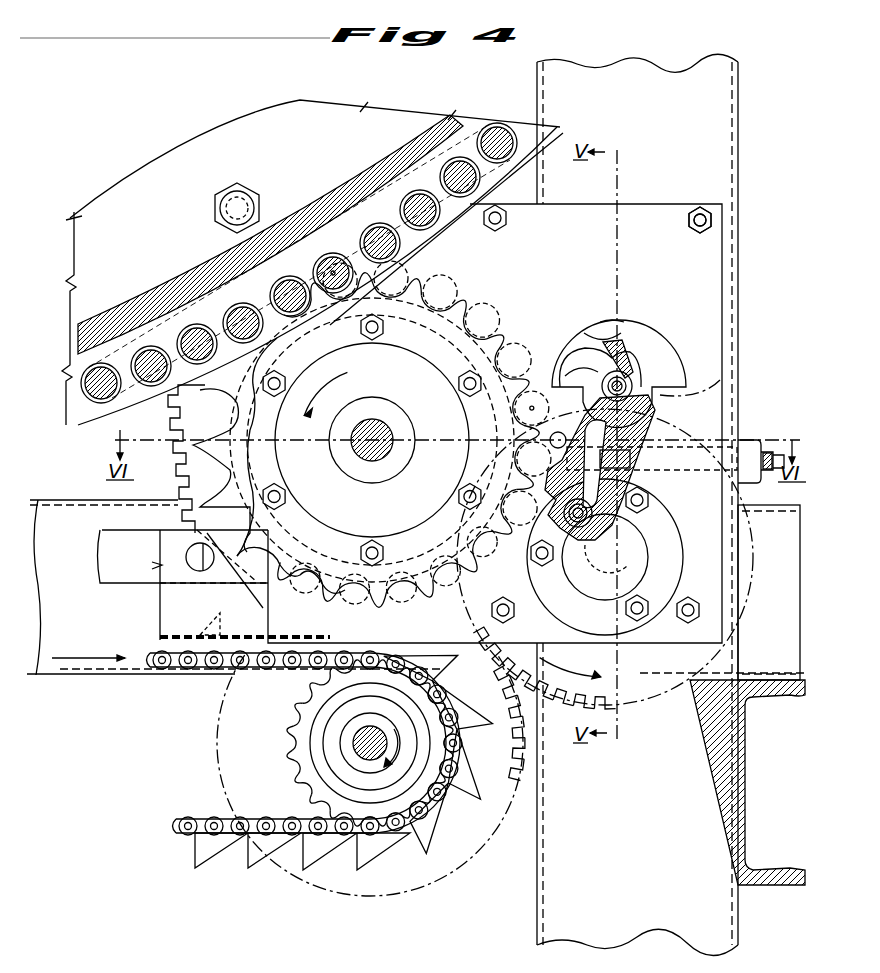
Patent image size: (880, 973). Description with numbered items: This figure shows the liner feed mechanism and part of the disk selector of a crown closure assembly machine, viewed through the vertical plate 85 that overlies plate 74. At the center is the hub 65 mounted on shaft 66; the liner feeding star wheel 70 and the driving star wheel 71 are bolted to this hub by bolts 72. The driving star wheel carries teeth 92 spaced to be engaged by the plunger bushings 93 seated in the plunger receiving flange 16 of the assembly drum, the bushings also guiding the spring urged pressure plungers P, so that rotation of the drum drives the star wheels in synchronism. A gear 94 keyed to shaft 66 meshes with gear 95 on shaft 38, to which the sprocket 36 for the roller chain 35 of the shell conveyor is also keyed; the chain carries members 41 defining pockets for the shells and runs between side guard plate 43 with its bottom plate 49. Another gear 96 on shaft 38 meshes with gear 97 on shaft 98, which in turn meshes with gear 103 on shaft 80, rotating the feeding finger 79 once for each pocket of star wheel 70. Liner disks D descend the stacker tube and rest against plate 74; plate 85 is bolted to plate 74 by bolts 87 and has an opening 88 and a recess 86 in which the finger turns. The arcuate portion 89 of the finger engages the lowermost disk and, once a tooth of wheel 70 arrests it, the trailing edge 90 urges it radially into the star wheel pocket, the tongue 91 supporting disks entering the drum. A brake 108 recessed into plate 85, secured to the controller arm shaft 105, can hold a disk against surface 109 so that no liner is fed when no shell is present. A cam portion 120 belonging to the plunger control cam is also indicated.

The plunger receiving flange 16 is at (138, 392).
The roller chain 35 is at (188, 818).
The sprocket 36 is at (270, 716).
The shaft 38 is at (373, 735).
The members 41 is at (200, 858).
The side guard plate 43 is at (158, 605).
The bottom plate 49 is at (158, 636).
The hub 65 is at (385, 439).
The shaft 66 is at (378, 455).
The liner feeding star wheel 70 is at (214, 452).
The driving star wheel 71 is at (257, 472).
The bolts 72 is at (255, 533).
The plate 74 is at (634, 326).
The feeding finger 79 is at (578, 345).
The shaft 80 is at (633, 388).
The vertical plate 85 is at (495, 423).
The recess 86 is at (683, 388).
The bolts 87 is at (700, 227).
The opening 88 is at (655, 340).
The arcuate portion 89 is at (598, 330).
The trailing edge 90 is at (558, 370).
The tongue 91 is at (390, 206).
The teeth 92 is at (420, 275).
The plunger bushings 93 is at (277, 275).
The gear 94 is at (170, 455).
The gear 95 is at (278, 780).
The gear 96 is at (520, 740).
The gear 97 is at (618, 703).
The shaft 98 is at (604, 562).
The gear 103 is at (630, 368).
The shaft 105 is at (582, 535).
The brake 108 is at (618, 432).
The surface 109 is at (553, 447).
The cam portion 120 is at (668, 516).
The pressure plungers P is at (333, 272).
The disks D is at (540, 405).